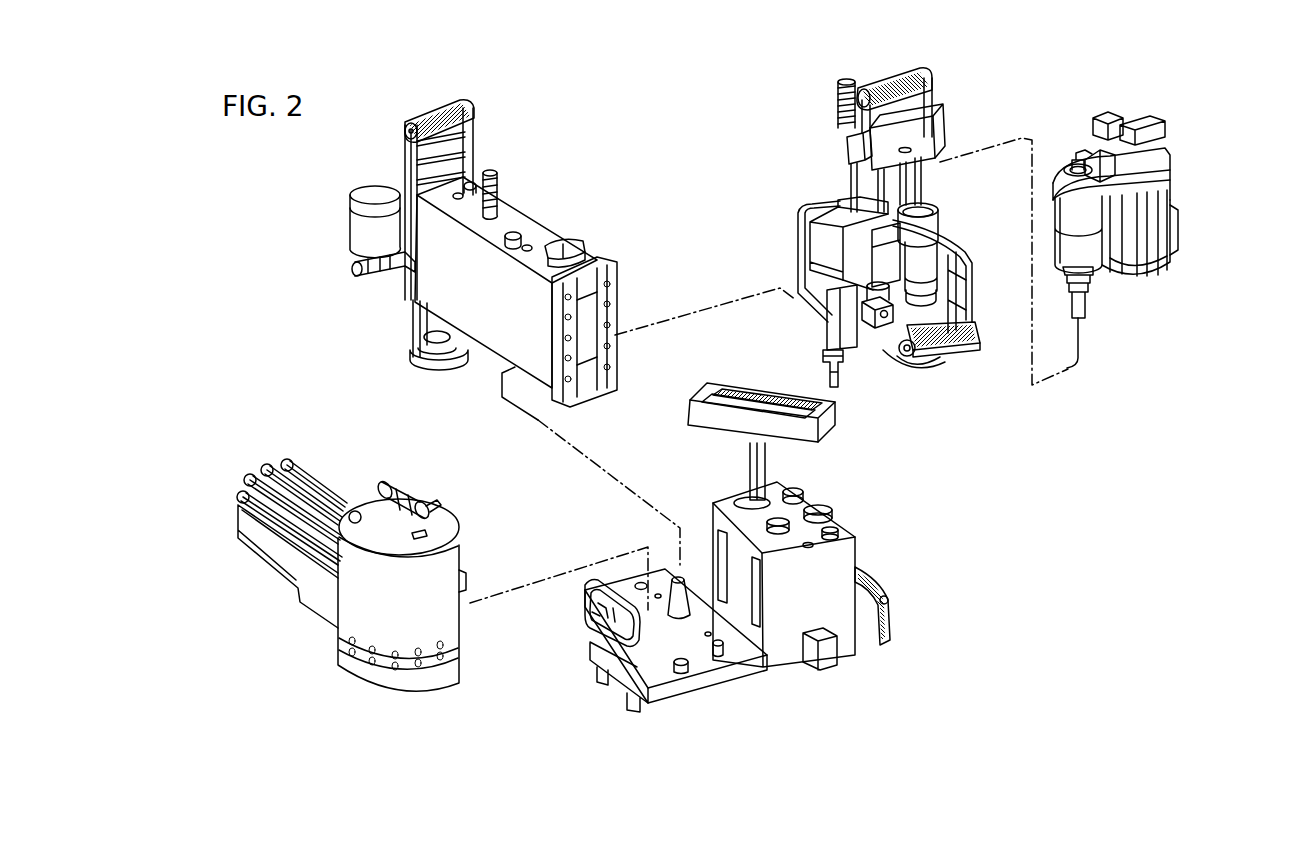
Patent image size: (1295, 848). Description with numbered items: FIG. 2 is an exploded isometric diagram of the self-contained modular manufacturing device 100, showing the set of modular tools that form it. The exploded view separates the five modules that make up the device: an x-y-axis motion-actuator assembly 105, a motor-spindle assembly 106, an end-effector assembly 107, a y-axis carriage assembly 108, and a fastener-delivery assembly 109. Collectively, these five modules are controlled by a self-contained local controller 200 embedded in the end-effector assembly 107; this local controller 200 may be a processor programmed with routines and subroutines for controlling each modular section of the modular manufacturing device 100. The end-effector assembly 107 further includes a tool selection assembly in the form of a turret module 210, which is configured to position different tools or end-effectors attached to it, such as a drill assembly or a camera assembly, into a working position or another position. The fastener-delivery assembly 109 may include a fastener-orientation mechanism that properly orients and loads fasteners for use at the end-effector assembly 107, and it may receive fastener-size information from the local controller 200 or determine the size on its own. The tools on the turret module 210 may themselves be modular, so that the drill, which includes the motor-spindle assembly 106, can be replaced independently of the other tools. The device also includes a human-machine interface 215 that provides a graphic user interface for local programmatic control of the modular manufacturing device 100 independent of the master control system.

The self-contained modular manufacturing device 100 is at (1074, 558).
The x-y-axis motion-actuator assembly 105 is at (737, 478).
The motor-spindle assembly 106 is at (1190, 219).
The end-effector assembly 107 is at (950, 357).
The y-axis carriage assembly 108 is at (375, 312).
The fastener-delivery assembly 109 is at (322, 630).
The local controller 200 is at (922, 272).
The turret module 210 is at (852, 392).
The human-machine interface 215 is at (755, 373).